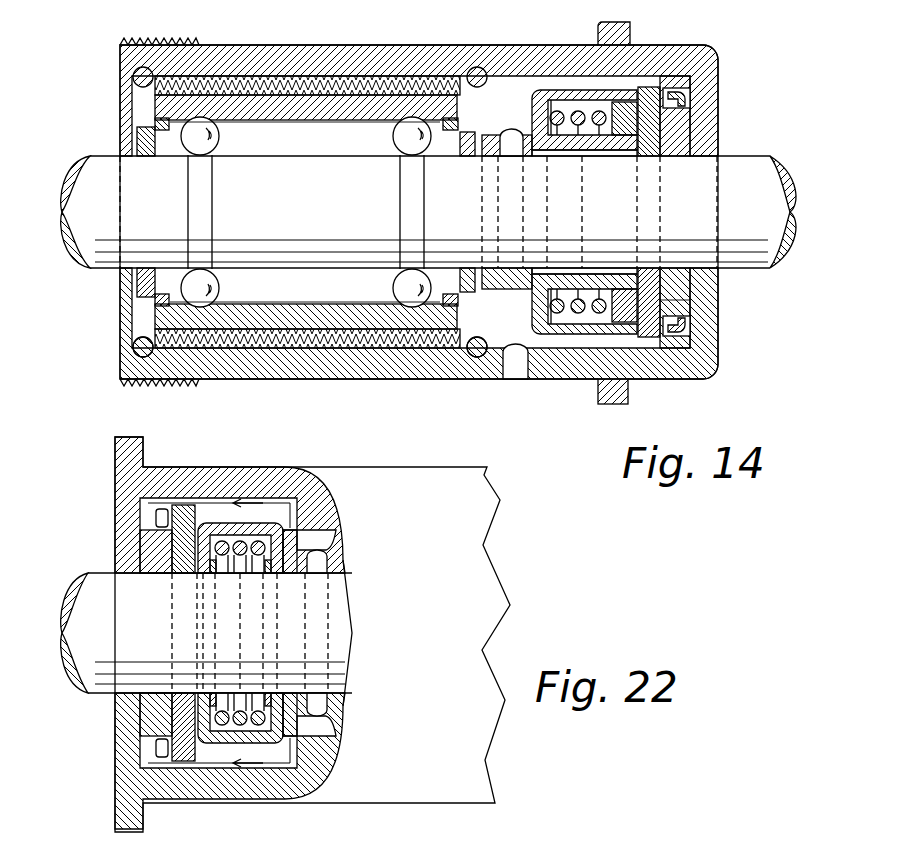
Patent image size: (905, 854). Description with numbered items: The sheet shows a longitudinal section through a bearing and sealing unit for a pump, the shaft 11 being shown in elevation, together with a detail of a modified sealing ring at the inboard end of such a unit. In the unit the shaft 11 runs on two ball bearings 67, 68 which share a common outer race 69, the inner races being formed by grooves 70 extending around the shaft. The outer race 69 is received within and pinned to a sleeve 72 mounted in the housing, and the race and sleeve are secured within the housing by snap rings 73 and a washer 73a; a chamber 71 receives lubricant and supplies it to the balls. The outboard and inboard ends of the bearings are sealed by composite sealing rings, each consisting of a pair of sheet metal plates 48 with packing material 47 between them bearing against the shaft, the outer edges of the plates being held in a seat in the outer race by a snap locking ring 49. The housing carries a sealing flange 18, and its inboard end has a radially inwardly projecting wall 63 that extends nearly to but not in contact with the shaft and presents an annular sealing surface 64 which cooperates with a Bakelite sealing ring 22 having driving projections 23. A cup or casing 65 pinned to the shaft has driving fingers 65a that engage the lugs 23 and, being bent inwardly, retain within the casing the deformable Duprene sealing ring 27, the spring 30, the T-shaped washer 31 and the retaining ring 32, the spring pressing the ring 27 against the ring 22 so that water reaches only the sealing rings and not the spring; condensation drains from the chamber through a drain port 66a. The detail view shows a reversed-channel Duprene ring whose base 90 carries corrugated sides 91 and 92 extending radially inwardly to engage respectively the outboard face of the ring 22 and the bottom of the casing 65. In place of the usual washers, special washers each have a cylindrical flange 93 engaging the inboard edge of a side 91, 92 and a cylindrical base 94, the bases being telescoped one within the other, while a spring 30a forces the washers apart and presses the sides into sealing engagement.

In FIG. 14, the shaft 11 is at (92, 268).
In FIG. 14, the sealing flange 18 is at (632, 30).
In FIG. 14, the sealing ring 22 is at (650, 158).
In FIG. 22, the sealing ring 22 is at (180, 541).
In FIG. 14, the driving projections 23 is at (652, 340).
In FIG. 22, the driving projections 23 is at (210, 832).
In FIG. 14, the sealing ring 27 is at (602, 280).
In FIG. 14, the spring 30 is at (573, 160).
In FIG. 22, the spring 30a is at (223, 576).
In FIG. 14, the washer 31 is at (602, 156).
In FIG. 14, the retaining ring 32 is at (610, 404).
In FIG. 14, the packing material 47 is at (148, 153).
In FIG. 14, the sheet metal plates 48 is at (137, 141).
In FIG. 14, the snap locking ring 49 is at (160, 120).
In FIG. 14, the radially inwardly projecting wall 63 is at (718, 101).
In FIG. 14, the sealing surface 64 is at (690, 125).
In FIG. 14, the cup or casing 65 is at (567, 90).
In FIG. 22, the cup or casing 65 is at (283, 524).
In FIG. 14, the driving fingers 65a is at (676, 96).
In FIG. 22, the driving fingers 65a is at (164, 758).
In FIG. 14, the drain port 66a is at (520, 380).
In FIG. 14, the ball bearing 67 is at (219, 138).
In FIG. 14, the ball bearing 68 is at (394, 137).
In FIG. 14, the common outer race 69 is at (376, 98).
In FIG. 14, the grooves 70 is at (212, 200).
In FIG. 14, the chamber 71 is at (312, 152).
In FIG. 14, the sleeve 72 is at (262, 76).
In FIG. 14, the snap rings 73 is at (480, 68).
In FIG. 14, the washer 73a is at (477, 357).
In FIG. 22, the base of the channel 90 is at (220, 523).
In FIG. 22, the radially inwardly extending side 91 is at (160, 556).
In FIG. 22, the radially inwardly extending side 92 is at (292, 545).
In FIG. 22, the cylindrical flange 93 is at (207, 567).
In FIG. 22, the cylindrical base 94 is at (226, 750).